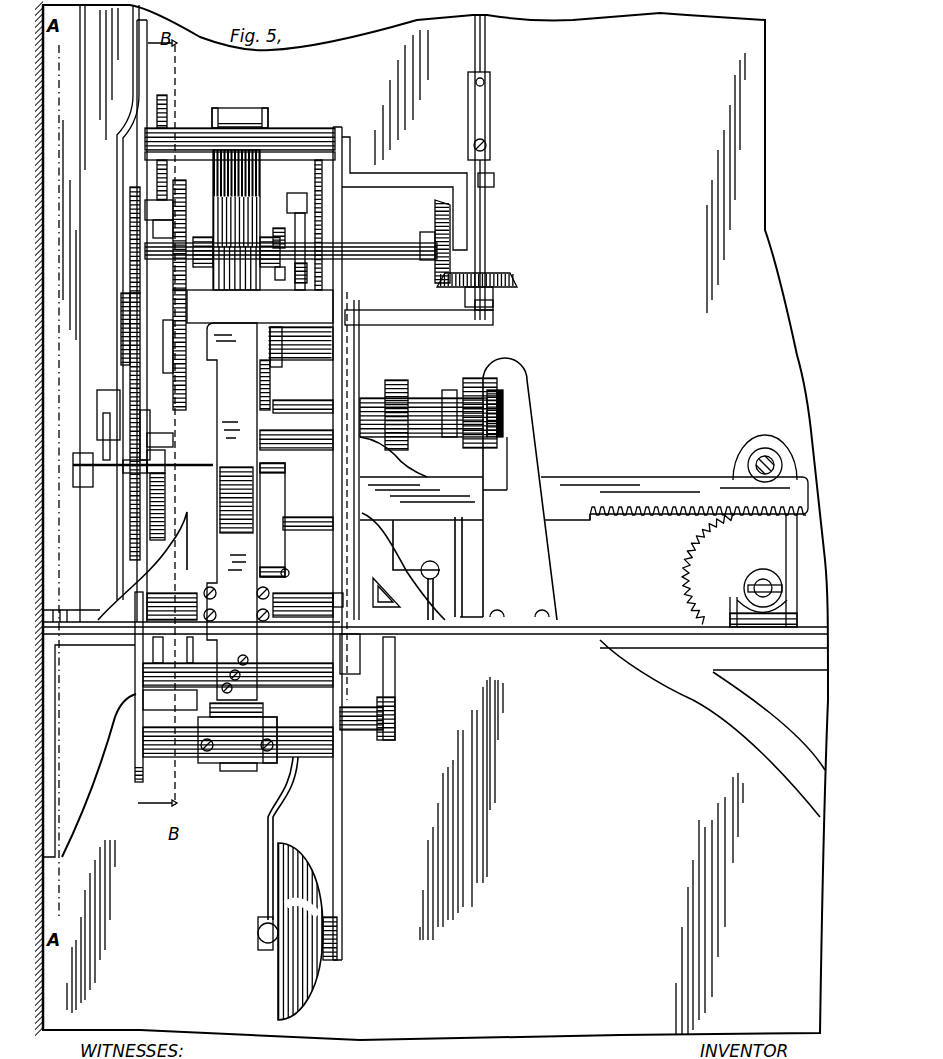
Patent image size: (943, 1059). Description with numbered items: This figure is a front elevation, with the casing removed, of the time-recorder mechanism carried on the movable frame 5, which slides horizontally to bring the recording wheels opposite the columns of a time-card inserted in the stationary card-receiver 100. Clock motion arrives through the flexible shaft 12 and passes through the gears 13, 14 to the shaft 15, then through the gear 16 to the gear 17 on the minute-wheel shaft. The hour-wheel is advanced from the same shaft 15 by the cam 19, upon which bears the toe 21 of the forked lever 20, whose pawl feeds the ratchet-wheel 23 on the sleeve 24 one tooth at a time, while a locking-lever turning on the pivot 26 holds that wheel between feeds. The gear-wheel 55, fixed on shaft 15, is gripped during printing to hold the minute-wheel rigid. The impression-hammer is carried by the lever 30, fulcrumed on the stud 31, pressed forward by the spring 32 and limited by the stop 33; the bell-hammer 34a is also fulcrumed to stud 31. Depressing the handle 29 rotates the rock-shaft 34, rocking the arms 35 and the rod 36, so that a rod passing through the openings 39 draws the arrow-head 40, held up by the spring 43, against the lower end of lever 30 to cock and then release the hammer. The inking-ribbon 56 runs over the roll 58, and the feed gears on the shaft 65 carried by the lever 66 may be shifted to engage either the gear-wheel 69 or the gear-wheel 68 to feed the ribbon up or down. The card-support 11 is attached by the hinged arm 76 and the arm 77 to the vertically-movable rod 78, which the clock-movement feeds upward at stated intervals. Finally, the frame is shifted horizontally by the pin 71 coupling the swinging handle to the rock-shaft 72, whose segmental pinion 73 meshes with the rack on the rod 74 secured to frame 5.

The movable frame 5 is at (140, 278).
The flexible shaft 12 is at (487, 44).
The roll 58 is at (266, 118).
The gear 16 is at (182, 210).
The gear 17 is at (175, 313).
The shaft 15 is at (190, 243).
The inking-ribbon 56 is at (236, 220).
The forked lever 20 is at (276, 234).
The cam 19 is at (300, 277).
The toe 21 is at (302, 196).
The gear-wheel 55 is at (316, 170).
The gear 14 is at (436, 210).
The gear 13 is at (517, 282).
The card-receiver 100 is at (260, 306).
The lever 30 is at (232, 511).
The spring 32 is at (236, 508).
The arrow-head 40 is at (252, 712).
The spring 43 is at (237, 744).
The openings 39 is at (273, 740).
The sleeve 24 is at (301, 347).
The ratchet-wheel 23 is at (271, 388).
The rock-shaft 34 is at (303, 414).
The pivot 26 is at (300, 450).
The hinged arm 76 is at (274, 520).
The card-support 11 is at (308, 536).
The stud 31 is at (290, 600).
The lever 66 is at (116, 170).
The gear-wheel 69 is at (130, 188).
The shaft 65 is at (130, 352).
The vertically-movable rod 78 is at (97, 404).
The arm 77 is at (125, 472).
The gear-wheel 68 is at (135, 506).
The handle 29 is at (503, 407).
The rod 74 is at (572, 478).
The segmental pinion 73 is at (690, 586).
The rock-shaft 72 is at (757, 583).
The pin 71 is at (783, 590).
The arms 35 is at (145, 693).
The rod 36 is at (366, 730).
The stop 33 is at (293, 676).
The bell-hammer 34a is at (273, 875).